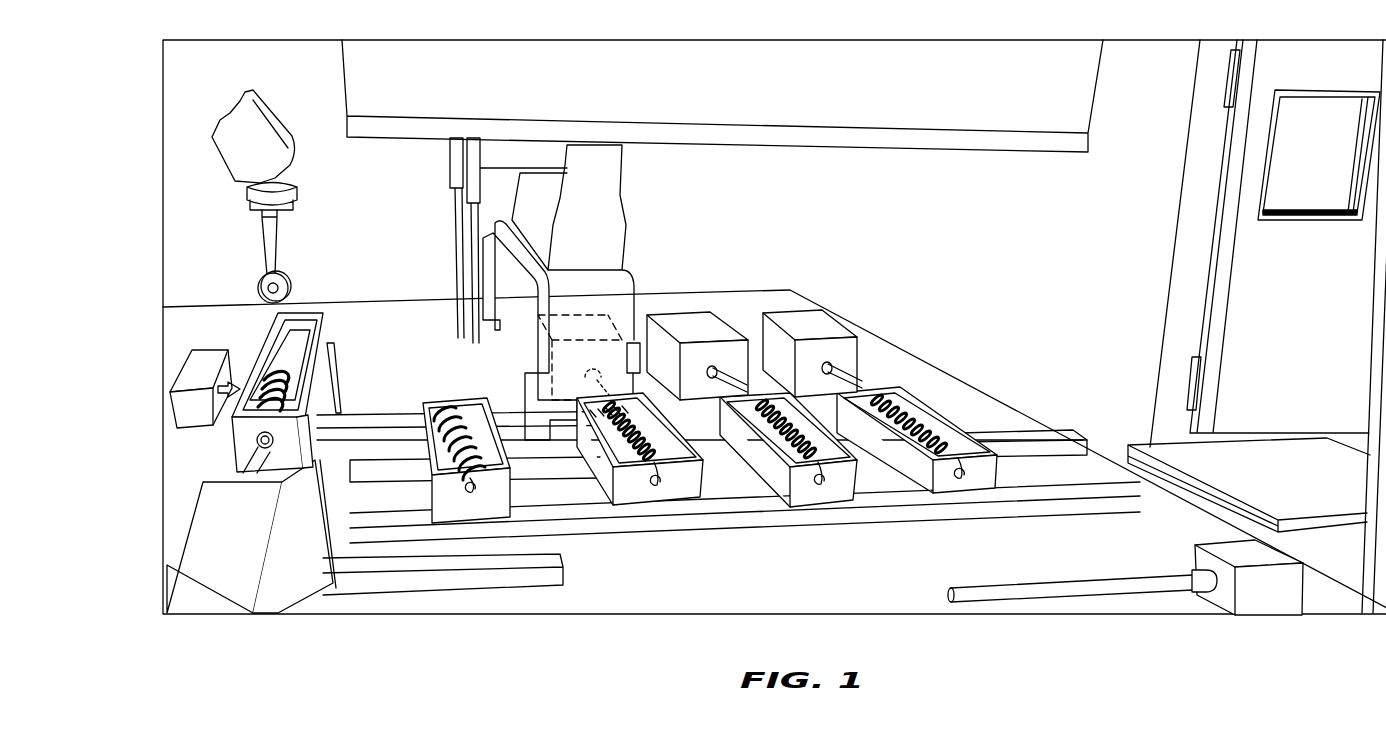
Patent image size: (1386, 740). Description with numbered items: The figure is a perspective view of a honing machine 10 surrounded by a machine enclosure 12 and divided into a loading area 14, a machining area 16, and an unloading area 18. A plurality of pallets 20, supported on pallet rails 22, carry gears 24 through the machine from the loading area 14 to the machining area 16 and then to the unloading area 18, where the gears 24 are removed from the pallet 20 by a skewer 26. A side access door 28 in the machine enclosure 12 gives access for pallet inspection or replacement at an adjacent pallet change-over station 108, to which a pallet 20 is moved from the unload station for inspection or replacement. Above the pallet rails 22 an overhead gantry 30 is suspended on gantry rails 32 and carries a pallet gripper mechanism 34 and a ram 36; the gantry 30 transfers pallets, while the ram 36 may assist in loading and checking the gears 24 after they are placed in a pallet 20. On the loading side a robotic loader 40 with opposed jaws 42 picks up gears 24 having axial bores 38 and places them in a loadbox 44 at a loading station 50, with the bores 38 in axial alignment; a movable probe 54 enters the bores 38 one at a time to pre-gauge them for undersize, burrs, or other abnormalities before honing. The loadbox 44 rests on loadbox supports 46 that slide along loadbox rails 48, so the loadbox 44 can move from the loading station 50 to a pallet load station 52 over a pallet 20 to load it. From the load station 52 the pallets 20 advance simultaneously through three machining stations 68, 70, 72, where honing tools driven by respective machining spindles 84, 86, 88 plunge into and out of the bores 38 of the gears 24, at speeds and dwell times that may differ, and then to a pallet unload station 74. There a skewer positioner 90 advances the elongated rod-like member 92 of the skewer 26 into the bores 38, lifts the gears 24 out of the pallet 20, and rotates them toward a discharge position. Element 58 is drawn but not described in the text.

The honing machine 10 is at (872, 205).
The machine enclosure 12 is at (1195, 173).
The loading area 14 is at (367, 273).
The machining area 16 is at (749, 248).
The unloading area 18 is at (1054, 313).
The pallet 20 is at (528, 510).
The pallet rails 22 is at (582, 530).
The gear 24 is at (262, 289).
The skewer 26 is at (1250, 618).
The side access door 28 is at (1276, 331).
The overhead gantry 30 is at (555, 168).
The gantry rails 32 is at (773, 137).
The pallet gripper mechanism 34 is at (502, 287).
The ram 36 is at (462, 212).
The axial bore 38 is at (268, 293).
The robotic loader 40 is at (247, 153).
The opposed jaws 42 is at (265, 243).
The loadbox 44 is at (240, 436).
The loadbox supports 46 is at (327, 398).
The loadbox rails 48 is at (360, 432).
The loading station 50 is at (292, 548).
The pallet load station 52 is at (465, 543).
The movable probe 54 is at (247, 462).
The feeder drive 58 is at (197, 363).
The machining station 68 is at (642, 543).
The machining station 70 is at (807, 533).
The machining station 72 is at (952, 533).
The pallet unload station 74 is at (1070, 533).
The machining spindle 84 is at (632, 400).
The machining spindle 86 is at (703, 320).
The machining spindle 88 is at (781, 318).
The skewer positioner 90 is at (1210, 542).
The rod-like member 92 is at (1067, 593).
The pallet change-over station 108 is at (1297, 496).